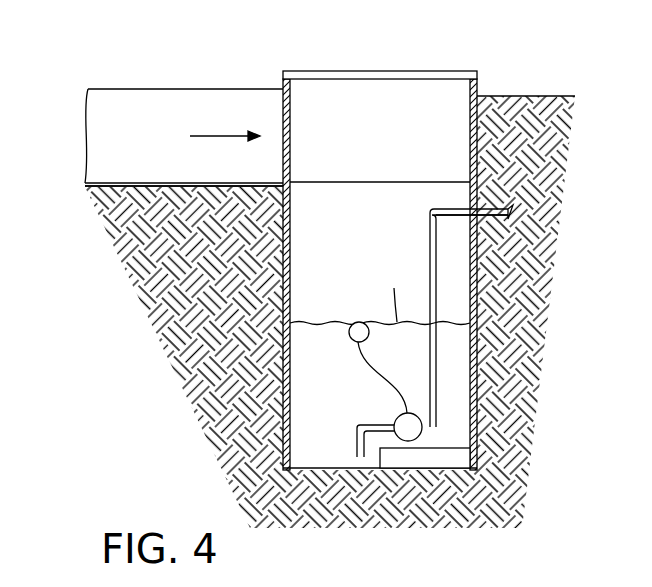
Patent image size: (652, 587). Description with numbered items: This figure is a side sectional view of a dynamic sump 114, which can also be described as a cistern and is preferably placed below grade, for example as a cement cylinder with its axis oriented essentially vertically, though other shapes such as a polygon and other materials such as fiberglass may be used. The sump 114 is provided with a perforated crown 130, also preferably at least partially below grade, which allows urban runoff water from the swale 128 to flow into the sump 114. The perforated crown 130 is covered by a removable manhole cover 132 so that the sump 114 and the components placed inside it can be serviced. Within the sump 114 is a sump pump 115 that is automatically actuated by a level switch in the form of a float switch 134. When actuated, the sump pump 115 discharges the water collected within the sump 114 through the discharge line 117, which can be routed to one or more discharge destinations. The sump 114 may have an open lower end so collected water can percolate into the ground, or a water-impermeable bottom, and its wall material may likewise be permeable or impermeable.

The swale 128 is at (155, 88).
The removable manhole cover 132 is at (423, 70).
The perforated crown 130 is at (478, 130).
The discharge line 117 is at (490, 220).
The dynamic sump 114 is at (283, 287).
The float switch 134 is at (350, 341).
The sump pump 115 is at (394, 413).